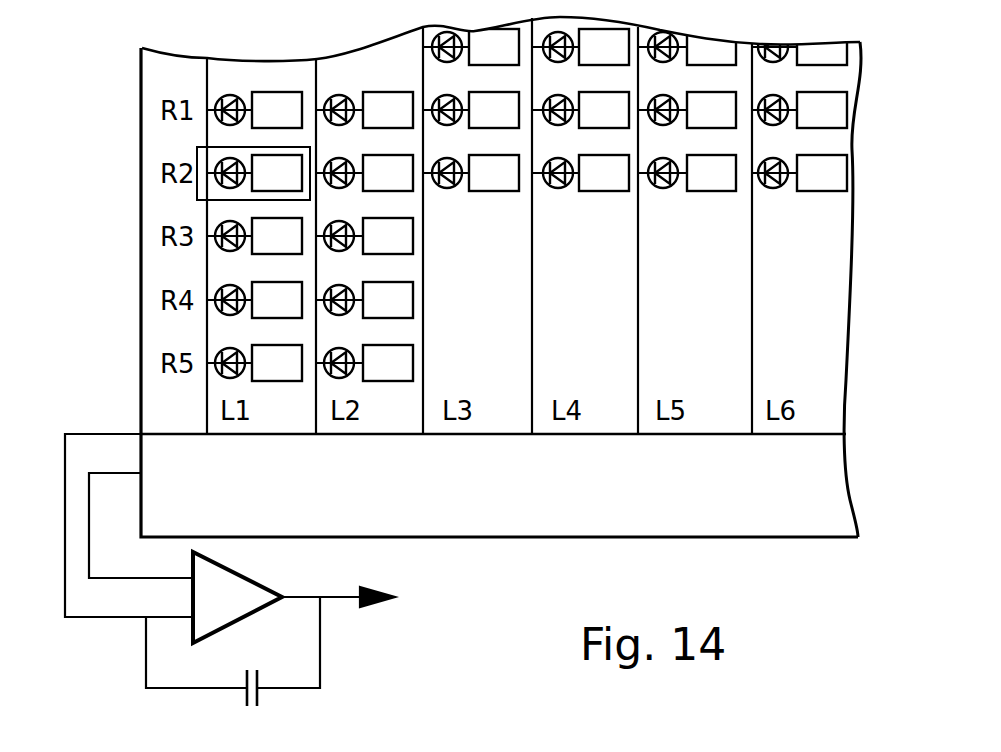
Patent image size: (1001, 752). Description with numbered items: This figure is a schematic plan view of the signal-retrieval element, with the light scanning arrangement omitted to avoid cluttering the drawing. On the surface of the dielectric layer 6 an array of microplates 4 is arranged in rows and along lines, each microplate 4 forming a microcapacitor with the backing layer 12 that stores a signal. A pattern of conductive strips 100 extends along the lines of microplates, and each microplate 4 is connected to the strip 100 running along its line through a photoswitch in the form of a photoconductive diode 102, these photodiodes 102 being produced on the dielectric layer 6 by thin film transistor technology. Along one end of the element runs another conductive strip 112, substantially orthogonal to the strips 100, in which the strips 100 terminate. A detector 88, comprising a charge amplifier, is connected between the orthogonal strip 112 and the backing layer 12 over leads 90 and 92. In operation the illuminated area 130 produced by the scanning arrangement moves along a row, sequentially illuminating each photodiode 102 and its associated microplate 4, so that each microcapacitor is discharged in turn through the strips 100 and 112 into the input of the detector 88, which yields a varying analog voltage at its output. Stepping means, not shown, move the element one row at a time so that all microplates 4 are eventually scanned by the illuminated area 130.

The microplates 4 is at (405, 362).
The dielectric layer 6 is at (597, 316).
The backing layer 12 is at (462, 539).
The detector 88 is at (237, 597).
The lead 90 is at (112, 433).
The lead 92 is at (88, 552).
The conductive strips 100 is at (206, 262).
The photoconductive diode 102 is at (233, 96).
The conductive strip 112 is at (408, 436).
The illuminated area 130 is at (198, 195).